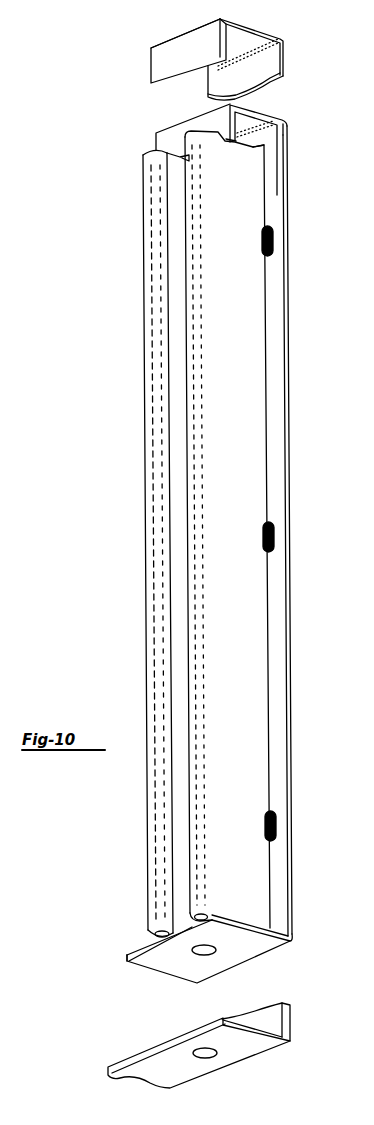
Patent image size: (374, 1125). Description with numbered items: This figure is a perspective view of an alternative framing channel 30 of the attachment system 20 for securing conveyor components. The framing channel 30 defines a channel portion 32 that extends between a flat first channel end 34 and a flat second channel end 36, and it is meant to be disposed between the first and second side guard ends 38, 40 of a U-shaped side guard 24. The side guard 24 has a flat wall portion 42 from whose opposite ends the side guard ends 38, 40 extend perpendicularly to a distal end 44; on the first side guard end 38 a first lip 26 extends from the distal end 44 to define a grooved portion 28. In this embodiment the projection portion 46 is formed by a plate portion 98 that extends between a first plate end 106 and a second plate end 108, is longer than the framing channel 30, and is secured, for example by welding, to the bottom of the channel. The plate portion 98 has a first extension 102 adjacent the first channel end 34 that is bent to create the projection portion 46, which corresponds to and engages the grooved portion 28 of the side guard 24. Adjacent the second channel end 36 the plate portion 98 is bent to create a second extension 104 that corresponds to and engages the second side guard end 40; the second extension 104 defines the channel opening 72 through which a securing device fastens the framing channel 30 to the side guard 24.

The attachment system 20 is at (115, 391).
The side guard 24 is at (282, 42).
The first lip 26 is at (157, 65).
The grooved portion 28 is at (243, 47).
The framing channel 30 is at (248, 745).
The channel portion 32 is at (183, 830).
The first channel end 34 is at (258, 145).
The second channel end 36 is at (152, 933).
The first side guard end 38 is at (243, 32).
The second side guard end 40 is at (258, 1042).
The flat wall portion 42 is at (277, 62).
The distal end 44 is at (205, 25).
The projection portion 46 is at (230, 107).
The channel opening 72 is at (203, 951).
The plate portion 98 is at (284, 591).
The first extension 102 is at (263, 115).
The second extension 104 is at (242, 953).
The first plate end 106 is at (222, 137).
The second plate end 108 is at (128, 955).